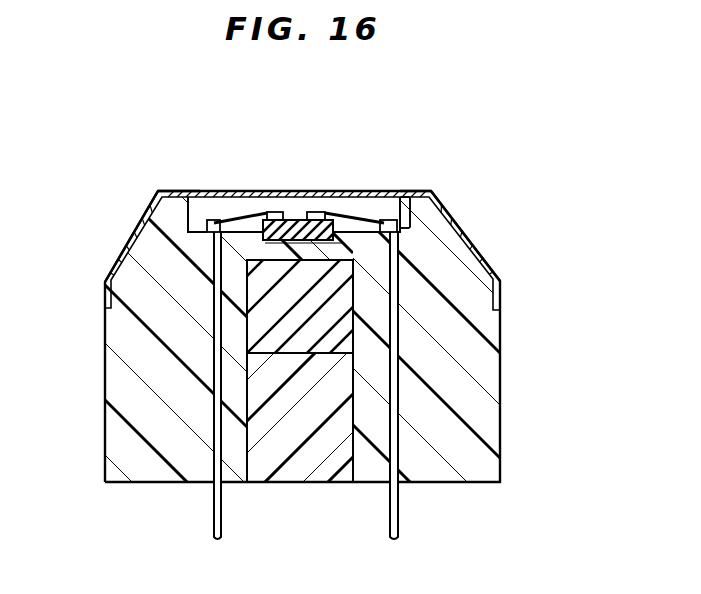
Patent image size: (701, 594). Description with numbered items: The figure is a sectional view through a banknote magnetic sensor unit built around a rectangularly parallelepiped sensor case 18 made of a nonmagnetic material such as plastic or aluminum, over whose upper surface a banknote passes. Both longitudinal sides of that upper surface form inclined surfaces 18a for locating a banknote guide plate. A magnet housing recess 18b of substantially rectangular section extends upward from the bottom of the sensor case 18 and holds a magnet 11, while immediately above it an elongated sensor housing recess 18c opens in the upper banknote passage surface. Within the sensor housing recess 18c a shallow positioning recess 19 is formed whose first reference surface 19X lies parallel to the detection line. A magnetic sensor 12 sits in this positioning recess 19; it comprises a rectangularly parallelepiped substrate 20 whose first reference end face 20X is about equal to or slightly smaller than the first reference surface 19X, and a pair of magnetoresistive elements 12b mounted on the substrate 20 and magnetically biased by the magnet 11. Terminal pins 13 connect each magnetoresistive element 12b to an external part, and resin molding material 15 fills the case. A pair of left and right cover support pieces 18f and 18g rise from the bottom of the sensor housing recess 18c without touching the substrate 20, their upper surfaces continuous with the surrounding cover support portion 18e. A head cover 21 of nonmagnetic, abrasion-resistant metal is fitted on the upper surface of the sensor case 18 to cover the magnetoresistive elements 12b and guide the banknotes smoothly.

The magnet 11 is at (265, 334).
The magnetic sensor 12 is at (280, 192).
The magnetoresistive element 12b is at (266, 200).
The terminal pin 13 is at (214, 538).
The resin molding material 15 is at (318, 457).
The sensor case 18 is at (125, 437).
The inclined surface 18a is at (127, 247).
The magnet housing recess 18b is at (247, 478).
The sensor housing recess 18c is at (405, 197).
The cover support portion 18e is at (165, 191).
The cover support piece 18f is at (188, 197).
The cover support piece 18g is at (383, 198).
The positioning recess 19 is at (342, 198).
The first reference surface 19X is at (217, 247).
The substrate 20 is at (296, 198).
The first reference end face 20X is at (212, 197).
The head cover 21 is at (500, 288).